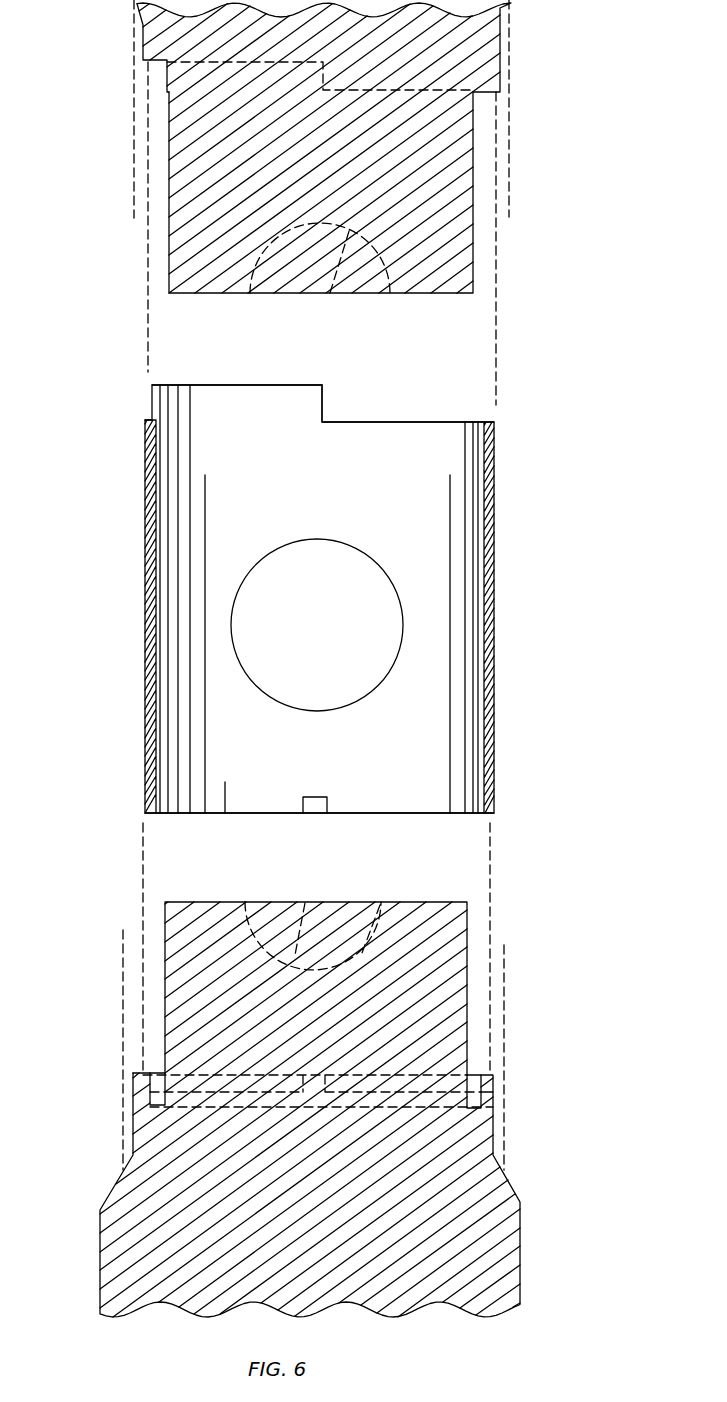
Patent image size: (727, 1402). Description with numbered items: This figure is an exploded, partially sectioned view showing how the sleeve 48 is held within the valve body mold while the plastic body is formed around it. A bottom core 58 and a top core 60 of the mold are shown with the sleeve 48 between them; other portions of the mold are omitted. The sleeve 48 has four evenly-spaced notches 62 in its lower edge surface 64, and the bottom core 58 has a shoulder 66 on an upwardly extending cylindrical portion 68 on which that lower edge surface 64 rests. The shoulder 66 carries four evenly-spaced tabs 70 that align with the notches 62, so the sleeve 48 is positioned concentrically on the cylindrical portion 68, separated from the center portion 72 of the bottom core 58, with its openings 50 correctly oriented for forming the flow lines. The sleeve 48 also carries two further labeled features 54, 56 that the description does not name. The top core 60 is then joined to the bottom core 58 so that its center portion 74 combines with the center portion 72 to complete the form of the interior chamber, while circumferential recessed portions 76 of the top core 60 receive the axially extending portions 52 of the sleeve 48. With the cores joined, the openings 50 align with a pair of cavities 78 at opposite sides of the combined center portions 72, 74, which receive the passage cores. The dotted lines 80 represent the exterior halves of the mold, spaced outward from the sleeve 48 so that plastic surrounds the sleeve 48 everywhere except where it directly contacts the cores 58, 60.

The sleeve 48 is at (508, 538).
The openings 50 is at (385, 573).
The axially extending portions 52 is at (282, 385).
The side wall 54 is at (152, 402).
The step 56 is at (323, 402).
The bottom core 58 is at (483, 1185).
The top core 60 is at (480, 25).
The notches 62 is at (145, 802).
The lower edge surface 64 is at (278, 813).
The shoulder 66 is at (472, 1083).
The cylindrical portion 68 is at (490, 1100).
The tabs 70 is at (143, 1085).
The center portion 72 is at (453, 948).
The center portion 74 is at (453, 227).
The circumferential recessed portions 76 is at (196, 64).
The cavities 78 is at (329, 296).
The dotted lines 80 is at (510, 93).